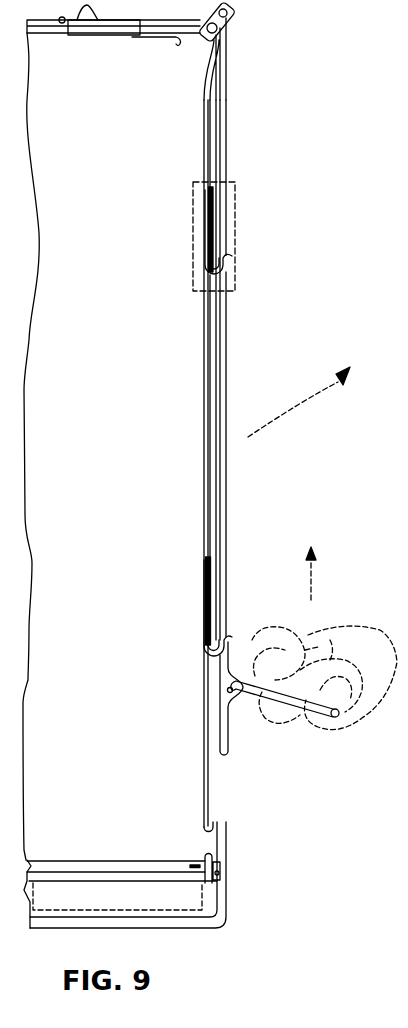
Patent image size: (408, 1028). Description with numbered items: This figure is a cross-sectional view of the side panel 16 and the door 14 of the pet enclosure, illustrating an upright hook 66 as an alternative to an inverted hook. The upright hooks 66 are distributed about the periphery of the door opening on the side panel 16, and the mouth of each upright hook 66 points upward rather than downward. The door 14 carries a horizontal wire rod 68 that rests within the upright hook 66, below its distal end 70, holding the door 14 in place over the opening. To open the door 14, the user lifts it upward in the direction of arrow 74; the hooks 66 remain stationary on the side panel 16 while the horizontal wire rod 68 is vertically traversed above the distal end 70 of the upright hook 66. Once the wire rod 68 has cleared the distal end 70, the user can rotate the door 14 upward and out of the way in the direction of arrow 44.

The door 14 is at (223, 73).
The side panel 16 is at (207, 396).
The upright hook 66 is at (193, 200).
The horizontal wire rod 68 is at (215, 241).
The distal end 70 is at (230, 256).
The arrow 44 is at (298, 416).
The arrow 74 is at (313, 568).